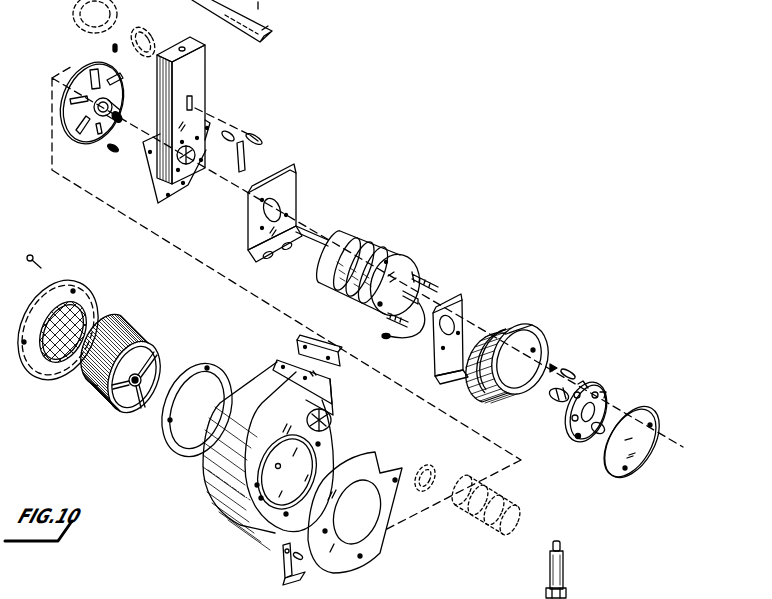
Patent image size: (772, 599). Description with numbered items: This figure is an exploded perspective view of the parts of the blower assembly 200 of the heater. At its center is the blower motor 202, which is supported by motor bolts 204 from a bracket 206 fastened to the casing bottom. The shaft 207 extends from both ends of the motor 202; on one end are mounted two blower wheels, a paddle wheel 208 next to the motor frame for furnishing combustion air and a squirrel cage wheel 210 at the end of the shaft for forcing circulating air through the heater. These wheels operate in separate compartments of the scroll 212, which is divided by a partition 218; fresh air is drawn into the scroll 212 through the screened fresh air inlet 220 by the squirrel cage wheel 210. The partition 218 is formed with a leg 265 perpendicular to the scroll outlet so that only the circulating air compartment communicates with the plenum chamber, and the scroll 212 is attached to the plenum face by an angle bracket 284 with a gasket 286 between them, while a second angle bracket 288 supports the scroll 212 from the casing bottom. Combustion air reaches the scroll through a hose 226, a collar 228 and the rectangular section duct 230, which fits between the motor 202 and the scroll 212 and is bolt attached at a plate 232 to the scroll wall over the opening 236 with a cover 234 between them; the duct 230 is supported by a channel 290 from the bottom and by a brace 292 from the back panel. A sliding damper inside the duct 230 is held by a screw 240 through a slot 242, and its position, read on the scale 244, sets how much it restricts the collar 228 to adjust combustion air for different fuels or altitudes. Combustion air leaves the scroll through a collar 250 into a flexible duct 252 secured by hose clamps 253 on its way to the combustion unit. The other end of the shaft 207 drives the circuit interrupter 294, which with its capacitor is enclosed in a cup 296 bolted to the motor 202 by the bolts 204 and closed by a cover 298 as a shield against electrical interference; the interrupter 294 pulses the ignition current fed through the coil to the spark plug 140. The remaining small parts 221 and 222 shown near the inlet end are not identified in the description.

The spark plug 140 is at (563, 576).
The blower assembly 200 is at (346, 150).
The blower motor 202 is at (373, 238).
The motor bolts 204 is at (428, 272).
The bracket 206 is at (461, 296).
The shaft 207 is at (327, 238).
The paddle wheel 208 is at (92, 130).
The squirrel cage wheel 210 is at (127, 326).
The scroll 212 is at (269, 456).
The partition 218 is at (299, 464).
The screened fresh air inlet 220 is at (83, 291).
The screw 221 is at (28, 256).
The gasket ring 222 is at (217, 366).
The hose 226 is at (92, 22).
The collar 228 is at (176, 43).
The rectangular section duct 230 is at (210, 93).
The plate 232 is at (175, 186).
The cover 234 is at (378, 556).
The opening 236 is at (268, 520).
The screw 240 is at (262, 136).
The slot 242 is at (193, 101).
The scale 244 is at (246, 156).
The collar 250 is at (331, 418).
The flexible duct 252 is at (512, 513).
The hose clamps 253 is at (436, 470).
The leg 265 is at (336, 388).
The angle bracket 284 is at (310, 365).
The gasket 286 is at (318, 342).
The angle bracket 288 is at (280, 556).
The channel 290 is at (296, 196).
The brace 292 is at (256, 27).
The circuit interrupter 294 is at (610, 385).
The cup 296 is at (518, 328).
The cover 298 is at (655, 427).